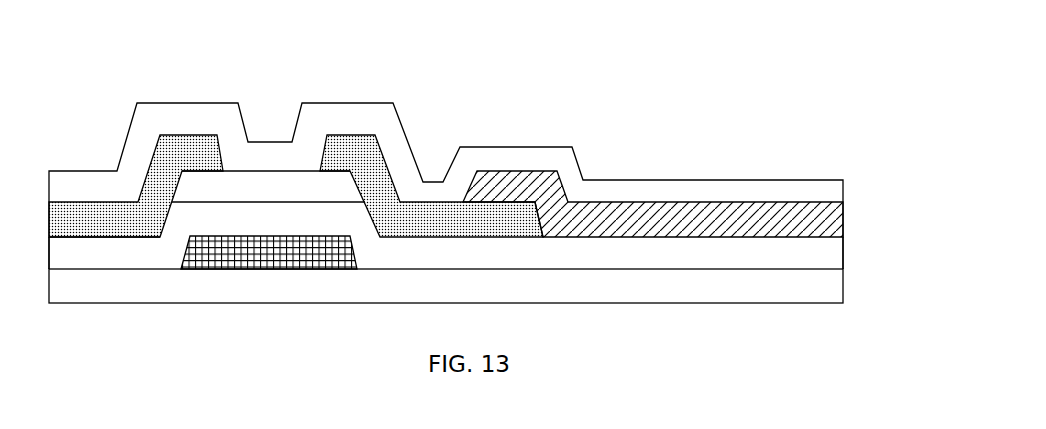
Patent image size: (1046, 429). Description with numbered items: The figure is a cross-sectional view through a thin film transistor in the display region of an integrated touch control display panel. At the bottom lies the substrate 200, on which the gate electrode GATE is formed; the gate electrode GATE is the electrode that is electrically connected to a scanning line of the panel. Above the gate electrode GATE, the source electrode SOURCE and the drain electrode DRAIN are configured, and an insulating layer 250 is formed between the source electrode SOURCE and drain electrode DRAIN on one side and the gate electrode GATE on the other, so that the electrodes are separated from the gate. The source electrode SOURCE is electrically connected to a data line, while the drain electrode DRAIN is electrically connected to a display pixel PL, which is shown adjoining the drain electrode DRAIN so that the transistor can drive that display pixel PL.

The substrate 200 is at (698, 288).
The insulating layer 250 is at (820, 248).
The gate electrode GATE is at (270, 257).
The source electrode SOURCE is at (172, 155).
The drain electrode DRAIN is at (375, 150).
The display pixel PL is at (660, 218).